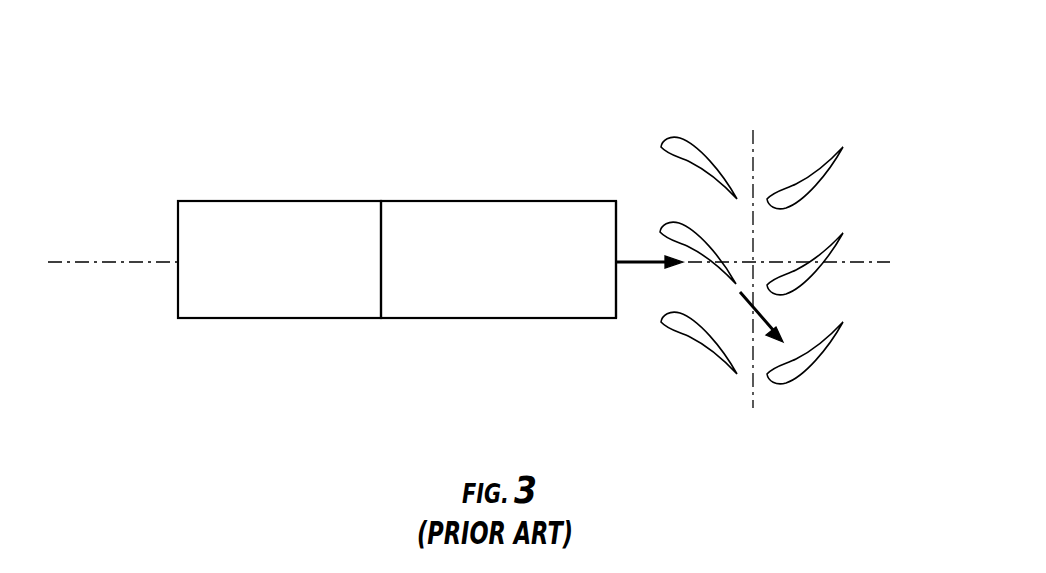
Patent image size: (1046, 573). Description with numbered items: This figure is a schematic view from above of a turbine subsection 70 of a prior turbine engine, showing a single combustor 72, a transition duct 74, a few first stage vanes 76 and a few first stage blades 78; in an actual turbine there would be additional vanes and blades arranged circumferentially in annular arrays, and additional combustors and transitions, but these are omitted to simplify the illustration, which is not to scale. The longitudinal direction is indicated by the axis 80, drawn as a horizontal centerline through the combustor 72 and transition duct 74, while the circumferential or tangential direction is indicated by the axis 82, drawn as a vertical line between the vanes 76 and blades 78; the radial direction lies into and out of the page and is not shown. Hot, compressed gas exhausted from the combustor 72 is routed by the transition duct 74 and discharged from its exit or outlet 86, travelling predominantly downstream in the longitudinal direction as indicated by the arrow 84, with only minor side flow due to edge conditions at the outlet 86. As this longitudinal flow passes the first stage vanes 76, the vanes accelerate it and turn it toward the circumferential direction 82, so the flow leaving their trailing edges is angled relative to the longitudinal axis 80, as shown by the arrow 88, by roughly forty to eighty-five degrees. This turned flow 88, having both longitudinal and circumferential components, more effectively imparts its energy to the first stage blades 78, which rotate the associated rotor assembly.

The turbine subsection 70 is at (574, 100).
The combustor 72 is at (238, 201).
The transition duct 74 is at (431, 201).
The first stage vanes 76 is at (713, 133).
The first stage blades 78 is at (789, 150).
The longitudinal axis 80 is at (485, 264).
The circumferential axis 82 is at (751, 291).
The longitudinal gas flow 84 is at (640, 264).
The outlet of the transition duct 86 is at (616, 225).
The turned gas flow 88 is at (752, 307).